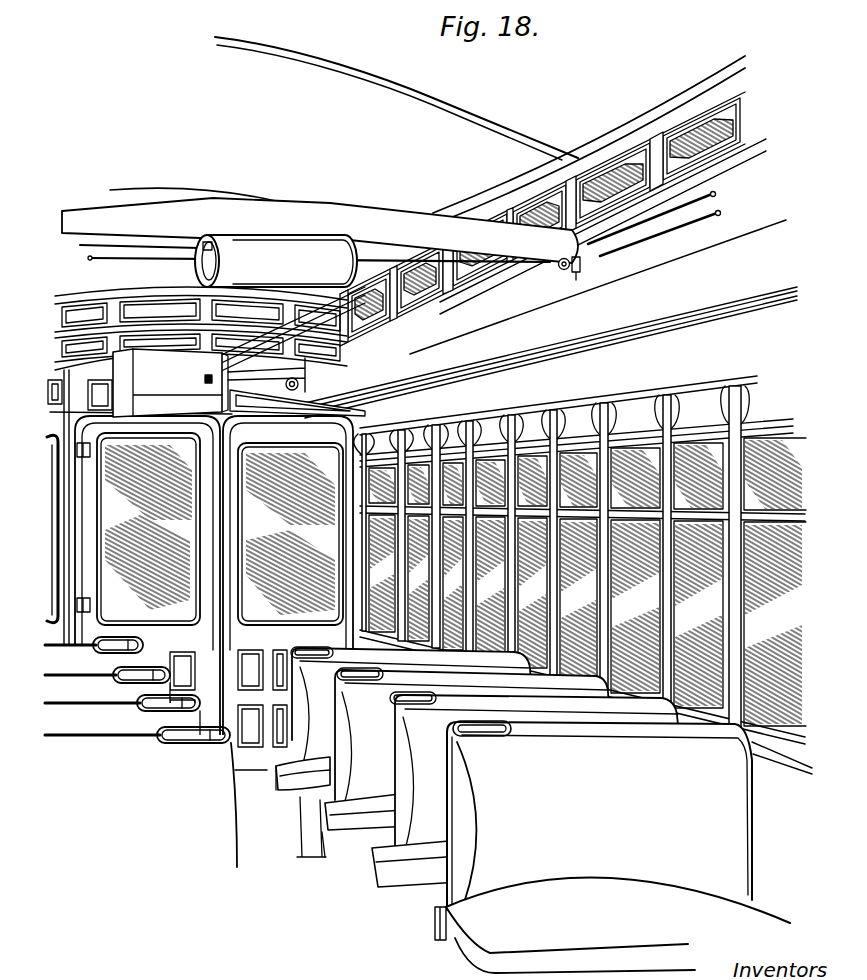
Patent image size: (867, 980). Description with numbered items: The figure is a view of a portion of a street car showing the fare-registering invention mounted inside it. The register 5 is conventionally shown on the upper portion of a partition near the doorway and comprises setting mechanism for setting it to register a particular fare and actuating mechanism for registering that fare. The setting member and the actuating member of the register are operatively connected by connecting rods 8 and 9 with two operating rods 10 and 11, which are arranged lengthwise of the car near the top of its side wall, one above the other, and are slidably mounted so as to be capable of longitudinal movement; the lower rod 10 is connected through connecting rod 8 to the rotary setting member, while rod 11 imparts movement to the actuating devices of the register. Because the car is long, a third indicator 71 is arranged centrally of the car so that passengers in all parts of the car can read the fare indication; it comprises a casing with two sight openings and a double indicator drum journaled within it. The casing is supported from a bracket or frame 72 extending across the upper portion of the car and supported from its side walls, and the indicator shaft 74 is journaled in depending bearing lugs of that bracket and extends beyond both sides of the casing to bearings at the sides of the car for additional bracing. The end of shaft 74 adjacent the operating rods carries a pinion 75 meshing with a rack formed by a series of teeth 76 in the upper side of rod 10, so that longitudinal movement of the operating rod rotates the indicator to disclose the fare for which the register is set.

The bracket or frame 72 is at (177, 207).
The central indicator 71 is at (200, 272).
The indicator shaft 74 is at (371, 258).
The connecting rod 9 is at (245, 365).
The register 5 is at (125, 395).
The connecting rod 8 is at (306, 398).
The operating rod 11 is at (716, 195).
The operating rod 10 is at (708, 218).
The pinion 75 is at (562, 271).
The teeth 76 is at (576, 282).